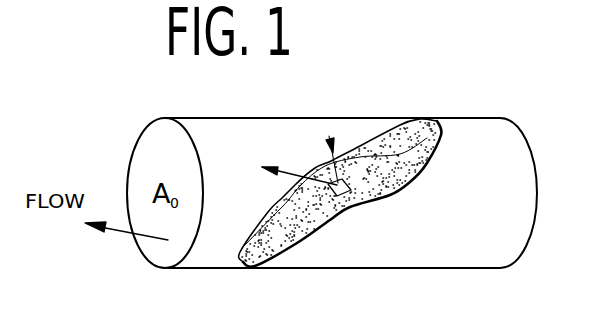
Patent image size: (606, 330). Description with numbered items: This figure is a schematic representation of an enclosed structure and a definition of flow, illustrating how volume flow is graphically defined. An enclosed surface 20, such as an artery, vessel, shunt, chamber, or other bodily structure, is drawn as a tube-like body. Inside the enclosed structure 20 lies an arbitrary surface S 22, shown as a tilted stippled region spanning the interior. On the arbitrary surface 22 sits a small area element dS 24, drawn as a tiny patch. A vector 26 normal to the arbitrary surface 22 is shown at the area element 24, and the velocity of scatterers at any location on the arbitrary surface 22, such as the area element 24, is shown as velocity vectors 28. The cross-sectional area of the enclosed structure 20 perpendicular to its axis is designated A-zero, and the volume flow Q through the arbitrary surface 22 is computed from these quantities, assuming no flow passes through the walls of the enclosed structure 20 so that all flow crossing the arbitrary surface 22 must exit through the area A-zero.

The enclosed surface 20 is at (467, 105).
The arbitrary surface 22 is at (380, 218).
The area element 24 is at (366, 187).
The vector normal to the arbitrary surface 26 is at (329, 136).
The velocity vectors 28 is at (270, 168).